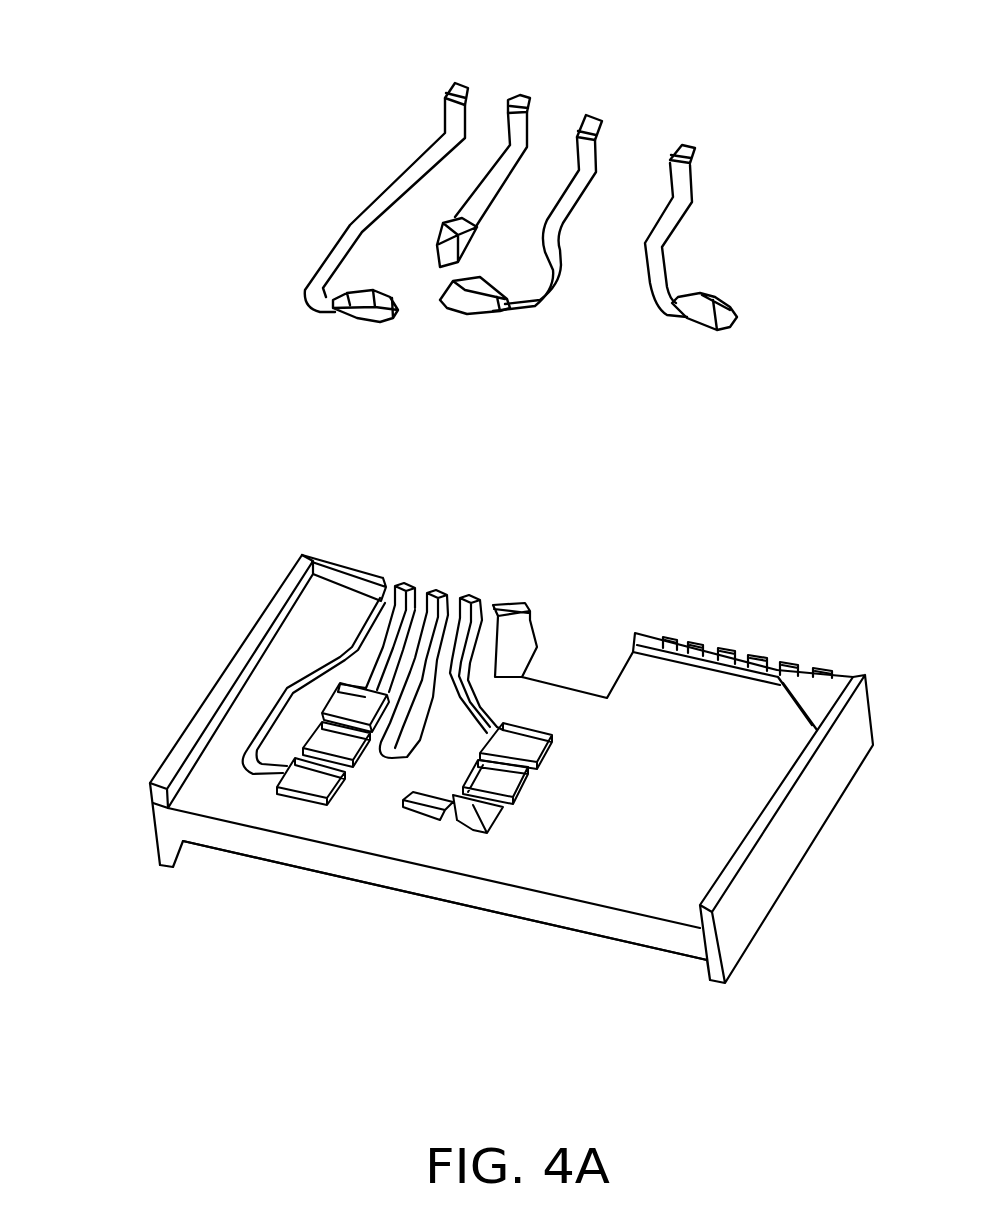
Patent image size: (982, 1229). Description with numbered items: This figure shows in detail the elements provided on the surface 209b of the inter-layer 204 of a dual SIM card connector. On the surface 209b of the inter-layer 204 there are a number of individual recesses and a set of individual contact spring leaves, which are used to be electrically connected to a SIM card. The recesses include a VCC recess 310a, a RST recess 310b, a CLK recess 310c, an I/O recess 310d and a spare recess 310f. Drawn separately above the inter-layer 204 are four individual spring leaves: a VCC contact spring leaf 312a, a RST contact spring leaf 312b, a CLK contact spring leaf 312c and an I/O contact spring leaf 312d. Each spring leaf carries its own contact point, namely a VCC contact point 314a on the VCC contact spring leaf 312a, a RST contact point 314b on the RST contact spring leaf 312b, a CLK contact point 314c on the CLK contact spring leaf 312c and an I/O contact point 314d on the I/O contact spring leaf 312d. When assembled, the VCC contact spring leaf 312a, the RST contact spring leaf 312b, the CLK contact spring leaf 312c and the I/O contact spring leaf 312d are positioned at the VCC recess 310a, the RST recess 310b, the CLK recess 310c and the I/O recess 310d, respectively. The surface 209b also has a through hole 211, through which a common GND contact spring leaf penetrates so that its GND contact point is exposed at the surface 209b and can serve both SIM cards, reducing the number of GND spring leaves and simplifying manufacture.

The VCC contact spring leaf 312a is at (437, 167).
The RST contact spring leaf 312b is at (593, 187).
The CLK contact spring leaf 312c is at (507, 163).
The I/O contact spring leaf 312d is at (667, 218).
The VCC contact point 314a is at (358, 320).
The RST contact point 314b is at (458, 318).
The CLK contact point 314c is at (437, 233).
The I/O contact point 314d is at (720, 323).
The VCC recess 310a is at (302, 813).
The RST recess 310b is at (295, 725).
The CLK recess 310c is at (324, 680).
The I/O recess 310d is at (564, 749).
The spare recess 310f is at (544, 792).
The through hole 211 is at (489, 828).
The inter-layer 204 is at (772, 858).
The surface 209b is at (591, 890).